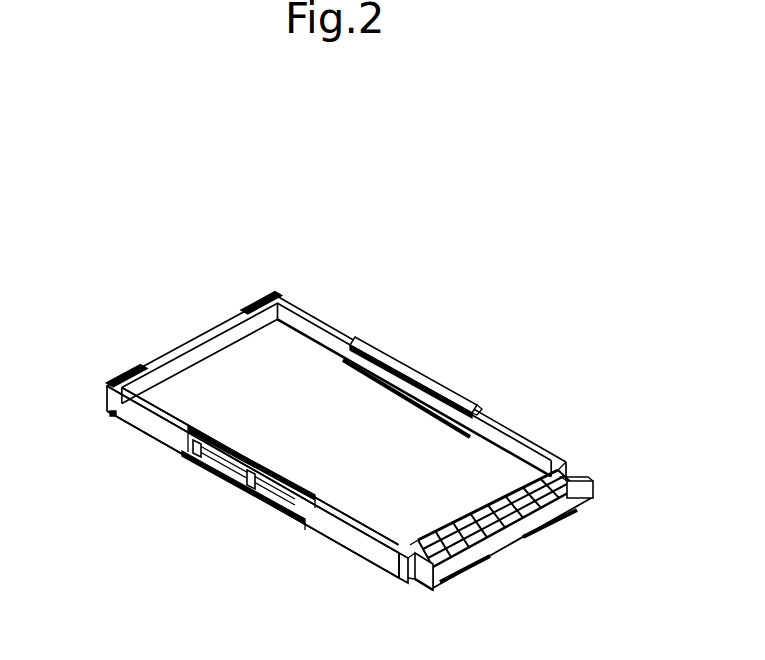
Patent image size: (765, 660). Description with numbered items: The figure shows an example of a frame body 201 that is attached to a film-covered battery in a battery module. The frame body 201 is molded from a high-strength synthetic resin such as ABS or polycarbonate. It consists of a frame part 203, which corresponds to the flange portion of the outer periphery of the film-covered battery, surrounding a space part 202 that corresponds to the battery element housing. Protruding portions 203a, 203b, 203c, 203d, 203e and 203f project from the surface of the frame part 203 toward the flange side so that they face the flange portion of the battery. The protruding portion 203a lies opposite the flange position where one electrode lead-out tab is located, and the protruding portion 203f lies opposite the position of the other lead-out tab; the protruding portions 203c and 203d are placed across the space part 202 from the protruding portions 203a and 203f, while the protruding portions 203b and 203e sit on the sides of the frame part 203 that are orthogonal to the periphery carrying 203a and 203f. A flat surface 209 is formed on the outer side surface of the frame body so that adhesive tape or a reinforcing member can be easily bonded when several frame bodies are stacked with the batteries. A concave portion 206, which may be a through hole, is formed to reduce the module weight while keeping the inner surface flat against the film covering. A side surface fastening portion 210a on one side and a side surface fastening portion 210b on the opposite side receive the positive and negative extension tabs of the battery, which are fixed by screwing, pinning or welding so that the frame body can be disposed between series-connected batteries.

The frame body 201 is at (146, 272).
The space part 202 is at (454, 462).
The frame part 203 is at (328, 308).
The protruding portion 203a is at (583, 503).
The protruding portion 203b is at (443, 380).
The protruding portion 203c is at (266, 290).
The protruding portion 203d is at (110, 410).
The protruding portion 203e is at (232, 484).
The protruding portion 203f is at (472, 578).
The concave portion 206 is at (205, 462).
The flat surface 209 is at (160, 426).
The side surface fastening portion 210a is at (417, 580).
The side surface fastening portion 210b is at (572, 472).